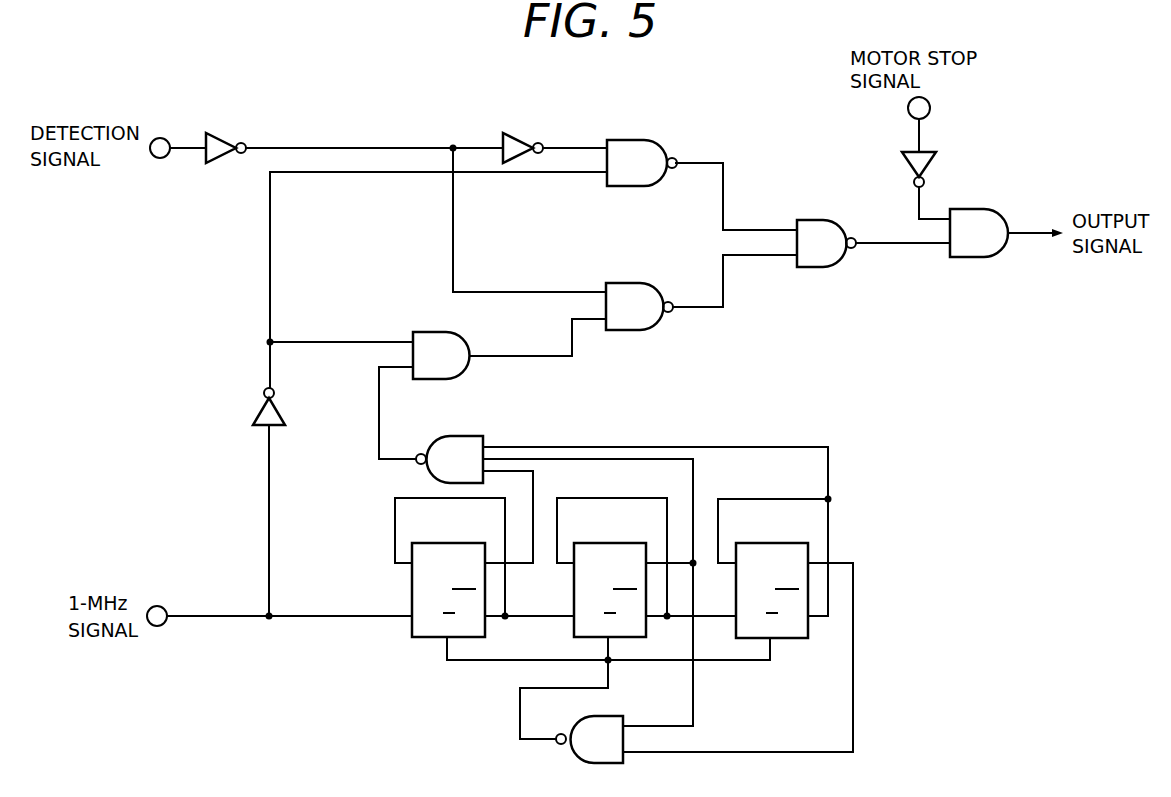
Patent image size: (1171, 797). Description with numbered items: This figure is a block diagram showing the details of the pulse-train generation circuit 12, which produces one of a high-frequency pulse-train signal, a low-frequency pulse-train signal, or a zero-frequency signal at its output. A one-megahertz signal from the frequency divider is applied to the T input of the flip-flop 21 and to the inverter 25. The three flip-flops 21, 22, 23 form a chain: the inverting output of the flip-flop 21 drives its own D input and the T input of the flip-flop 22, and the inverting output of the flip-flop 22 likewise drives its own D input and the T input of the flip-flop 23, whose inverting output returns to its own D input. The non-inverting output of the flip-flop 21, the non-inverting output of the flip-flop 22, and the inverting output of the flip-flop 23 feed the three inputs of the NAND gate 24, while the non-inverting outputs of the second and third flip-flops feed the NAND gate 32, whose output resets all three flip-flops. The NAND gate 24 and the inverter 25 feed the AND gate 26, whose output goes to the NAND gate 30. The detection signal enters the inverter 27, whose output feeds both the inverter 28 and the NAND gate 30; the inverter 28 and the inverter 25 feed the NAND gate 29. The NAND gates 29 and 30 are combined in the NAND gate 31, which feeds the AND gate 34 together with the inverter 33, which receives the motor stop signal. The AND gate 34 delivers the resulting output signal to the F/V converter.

The pulse-train generation circuit 12 is at (711, 113).
The flip-flop 21 is at (460, 543).
The flip-flop 22 is at (622, 543).
The flip-flop 23 is at (782, 544).
The NAND gate 24 is at (468, 436).
The inverter 25 is at (285, 409).
The AND gate 26 is at (448, 332).
The inverter 27 is at (226, 134).
The inverter 28 is at (522, 137).
The NAND gate 29 is at (648, 140).
The NAND gate 30 is at (642, 283).
The NAND gate 31 is at (829, 220).
The NAND gate 32 is at (612, 716).
The inverter 33 is at (934, 166).
The AND gate 34 is at (985, 209).